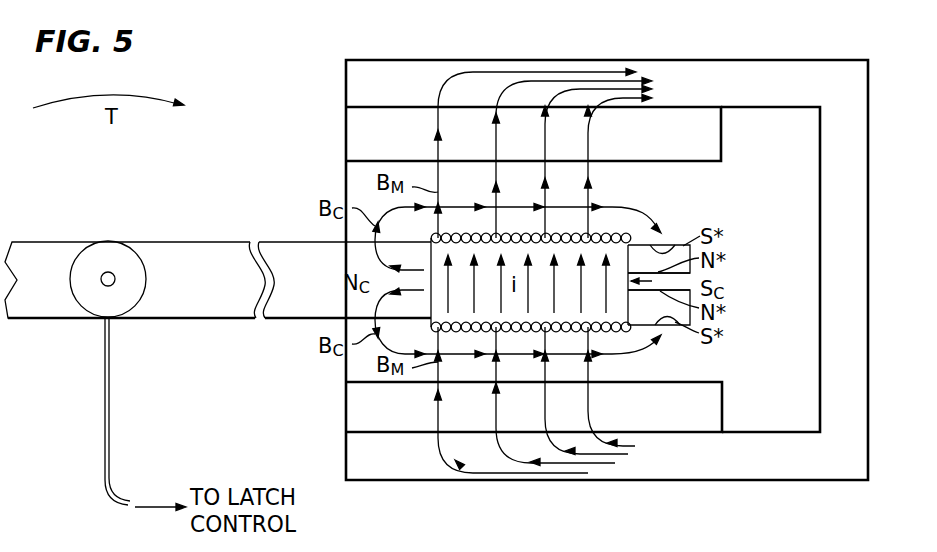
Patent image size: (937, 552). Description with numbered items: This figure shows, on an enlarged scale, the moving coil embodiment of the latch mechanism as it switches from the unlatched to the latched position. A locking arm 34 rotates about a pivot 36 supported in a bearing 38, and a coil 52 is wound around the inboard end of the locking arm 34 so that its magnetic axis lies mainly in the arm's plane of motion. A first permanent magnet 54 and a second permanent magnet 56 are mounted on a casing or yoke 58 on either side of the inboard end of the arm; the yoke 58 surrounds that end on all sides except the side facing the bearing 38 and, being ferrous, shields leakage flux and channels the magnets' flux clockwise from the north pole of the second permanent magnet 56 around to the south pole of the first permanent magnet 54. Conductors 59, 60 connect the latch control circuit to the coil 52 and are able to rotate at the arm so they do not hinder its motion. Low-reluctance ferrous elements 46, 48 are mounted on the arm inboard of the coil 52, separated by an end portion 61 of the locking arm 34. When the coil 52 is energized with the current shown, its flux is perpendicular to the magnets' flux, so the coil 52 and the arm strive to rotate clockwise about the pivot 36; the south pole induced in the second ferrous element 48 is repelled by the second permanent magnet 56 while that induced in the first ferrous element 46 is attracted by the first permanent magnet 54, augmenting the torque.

The locking arm 34 is at (213, 240).
The pivot 36 is at (112, 272).
The bearing 38 is at (103, 250).
The first ferrous element 46 is at (660, 328).
The second ferrous element 48 is at (667, 245).
The coil 52 is at (624, 238).
The first permanent magnet 54 is at (346, 388).
The second permanent magnet 56 is at (346, 136).
The casing or yoke 58 is at (698, 61).
The conductor 59 is at (105, 450).
The conductor 60 is at (110, 388).
The end portion 61 is at (678, 282).